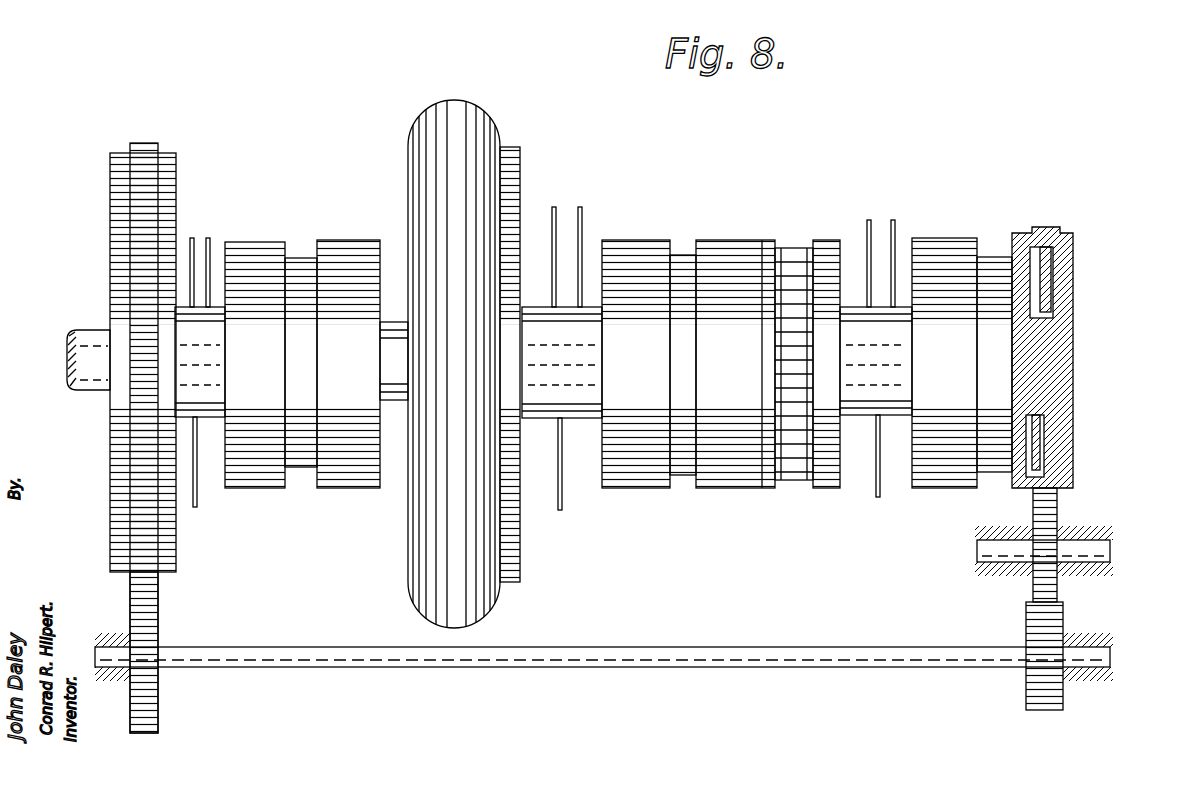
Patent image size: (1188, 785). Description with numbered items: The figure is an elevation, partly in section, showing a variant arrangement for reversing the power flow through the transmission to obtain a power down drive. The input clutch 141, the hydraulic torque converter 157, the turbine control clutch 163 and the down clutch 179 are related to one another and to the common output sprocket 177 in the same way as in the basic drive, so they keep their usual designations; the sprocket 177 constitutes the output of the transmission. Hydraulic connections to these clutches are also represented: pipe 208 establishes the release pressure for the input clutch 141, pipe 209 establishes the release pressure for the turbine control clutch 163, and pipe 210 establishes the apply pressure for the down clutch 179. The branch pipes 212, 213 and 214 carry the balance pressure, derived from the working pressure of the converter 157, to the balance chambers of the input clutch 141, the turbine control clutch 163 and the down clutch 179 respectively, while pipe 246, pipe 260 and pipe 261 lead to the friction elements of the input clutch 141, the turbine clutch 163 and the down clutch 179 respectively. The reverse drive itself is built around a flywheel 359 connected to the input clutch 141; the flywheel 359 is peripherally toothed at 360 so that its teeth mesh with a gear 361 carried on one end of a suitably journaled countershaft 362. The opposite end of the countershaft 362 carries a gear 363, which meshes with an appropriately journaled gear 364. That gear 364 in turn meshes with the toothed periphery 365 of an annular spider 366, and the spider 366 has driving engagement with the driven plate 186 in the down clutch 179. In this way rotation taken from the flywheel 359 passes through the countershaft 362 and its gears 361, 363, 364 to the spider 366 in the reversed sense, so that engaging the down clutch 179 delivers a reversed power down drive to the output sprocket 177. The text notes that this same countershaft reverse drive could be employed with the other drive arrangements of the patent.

The input clutch 141 is at (262, 242).
The converter 157 is at (486, 118).
The turbine control clutch 163 is at (641, 240).
The sprocket 177 is at (823, 240).
The down clutch 179 is at (943, 238).
The driven plate 186 is at (1057, 335).
The pipe 208 is at (195, 507).
The pipe 209 is at (560, 510).
The pipe 210 is at (878, 497).
The branch pipe 212 is at (208, 238).
The branch pipe 213 is at (580, 207).
The branch pipe 214 is at (893, 220).
The pipe 246 is at (191, 238).
The pipe 260 is at (554, 207).
The pipe 261 is at (869, 220).
The flywheel 359 is at (110, 256).
The peripheral teeth 360 is at (130, 148).
The gear 361 is at (157, 611).
The countershaft 362 is at (282, 648).
The gear 363 is at (1026, 690).
The gear 364 is at (1033, 586).
The toothed periphery 365 is at (1058, 492).
The annular spider 366 is at (1073, 426).